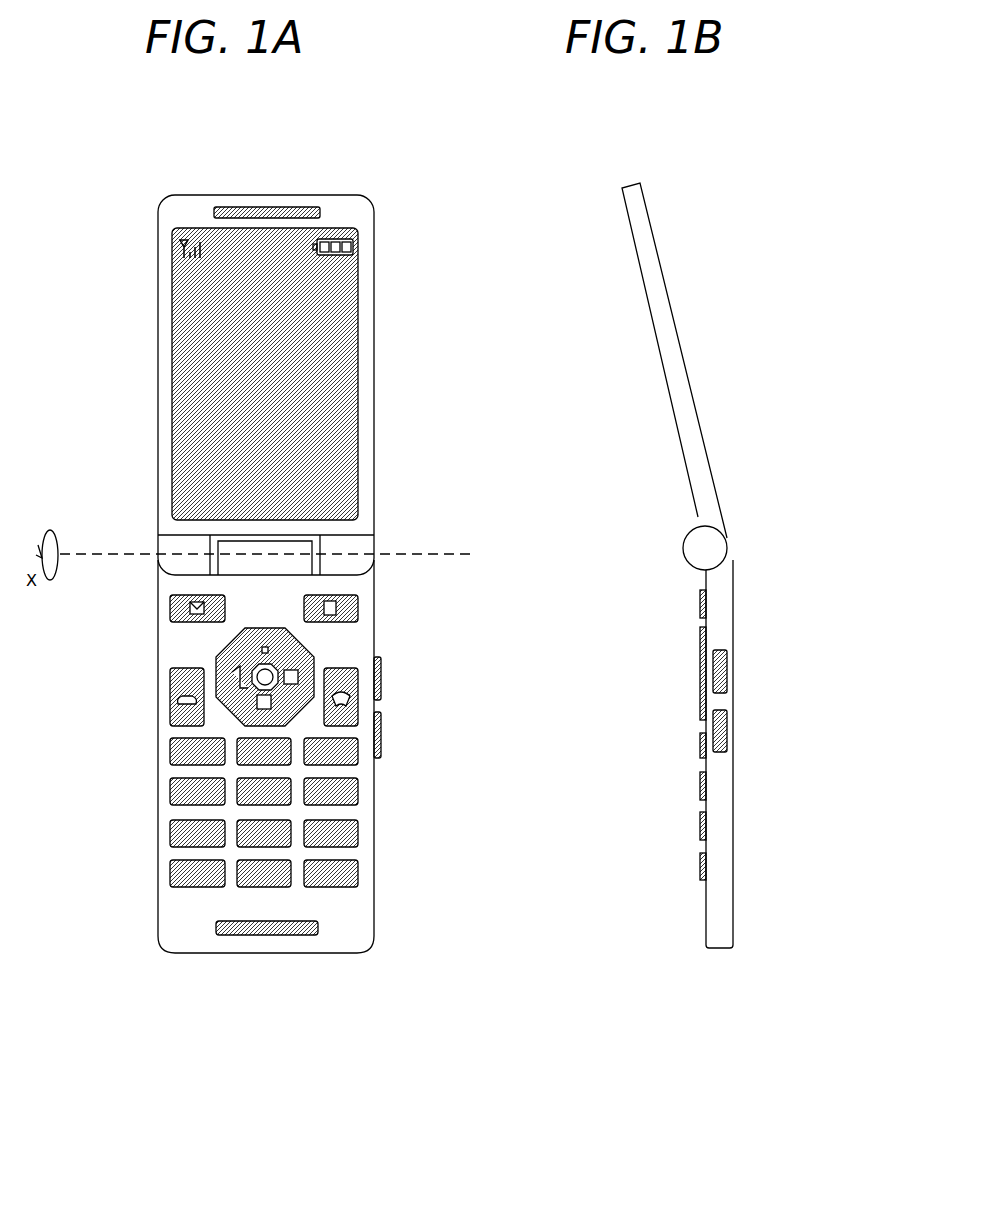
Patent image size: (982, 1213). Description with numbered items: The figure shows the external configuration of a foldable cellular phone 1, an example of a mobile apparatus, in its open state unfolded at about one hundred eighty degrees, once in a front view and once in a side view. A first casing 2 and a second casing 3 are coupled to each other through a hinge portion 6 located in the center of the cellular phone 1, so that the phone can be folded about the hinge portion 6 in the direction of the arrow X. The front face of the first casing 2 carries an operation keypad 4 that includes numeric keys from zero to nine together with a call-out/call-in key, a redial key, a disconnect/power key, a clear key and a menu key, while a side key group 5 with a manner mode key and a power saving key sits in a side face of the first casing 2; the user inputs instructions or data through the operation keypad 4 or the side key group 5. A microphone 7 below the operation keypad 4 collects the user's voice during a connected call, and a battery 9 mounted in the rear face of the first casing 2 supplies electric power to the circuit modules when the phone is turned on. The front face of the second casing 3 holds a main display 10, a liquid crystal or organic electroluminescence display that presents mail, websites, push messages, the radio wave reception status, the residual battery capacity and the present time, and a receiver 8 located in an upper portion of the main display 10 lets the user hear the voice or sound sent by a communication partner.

In FIG. 1A, the cellular phone 1 is at (255, 575).
In FIG. 1B, the cellular phone 1 is at (709, 578).
In FIG. 1A, the first casing 2 is at (205, 774).
In FIG. 1B, the first casing 2 is at (727, 754).
In FIG. 1A, the second casing 3 is at (215, 368).
In FIG. 1B, the second casing 3 is at (666, 373).
In FIG. 1A, the operation keypad 4 is at (228, 741).
In FIG. 1B, the operation keypad 4 is at (686, 598).
In FIG. 1A, the side key group 5 is at (389, 655).
In FIG. 1B, the side key group 5 is at (745, 650).
In FIG. 1A, the hinge portion 6 is at (263, 552).
In FIG. 1B, the hinge portion 6 is at (705, 548).
In FIG. 1A, the microphone 7 is at (219, 928).
In FIG. 1A, the receiver 8 is at (318, 213).
In FIG. 1B, the battery 9 is at (720, 836).
In FIG. 1A, the main display 10 is at (172, 390).